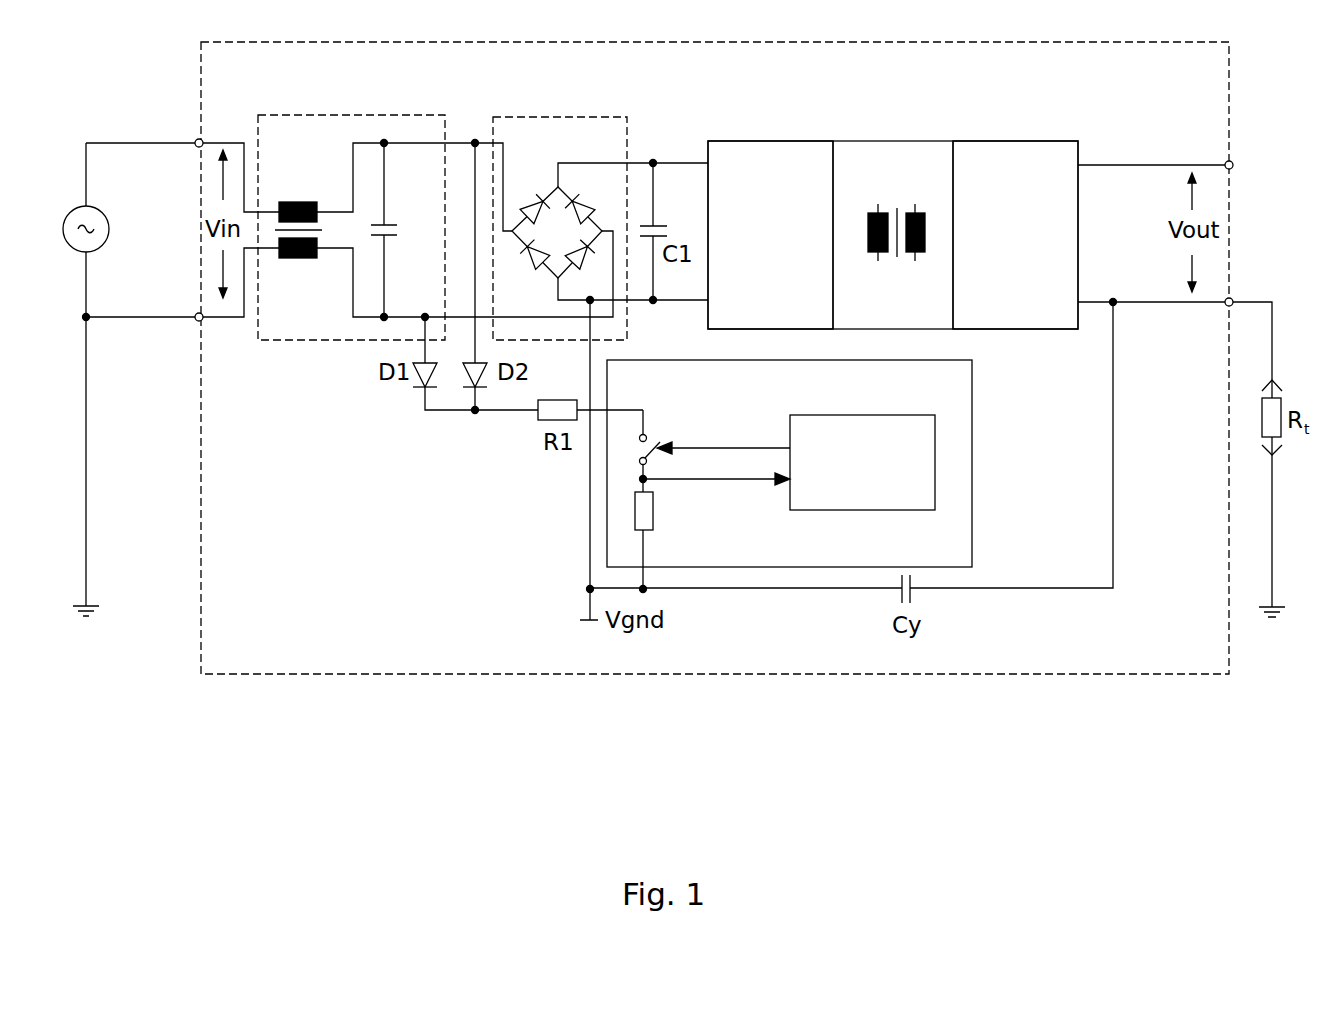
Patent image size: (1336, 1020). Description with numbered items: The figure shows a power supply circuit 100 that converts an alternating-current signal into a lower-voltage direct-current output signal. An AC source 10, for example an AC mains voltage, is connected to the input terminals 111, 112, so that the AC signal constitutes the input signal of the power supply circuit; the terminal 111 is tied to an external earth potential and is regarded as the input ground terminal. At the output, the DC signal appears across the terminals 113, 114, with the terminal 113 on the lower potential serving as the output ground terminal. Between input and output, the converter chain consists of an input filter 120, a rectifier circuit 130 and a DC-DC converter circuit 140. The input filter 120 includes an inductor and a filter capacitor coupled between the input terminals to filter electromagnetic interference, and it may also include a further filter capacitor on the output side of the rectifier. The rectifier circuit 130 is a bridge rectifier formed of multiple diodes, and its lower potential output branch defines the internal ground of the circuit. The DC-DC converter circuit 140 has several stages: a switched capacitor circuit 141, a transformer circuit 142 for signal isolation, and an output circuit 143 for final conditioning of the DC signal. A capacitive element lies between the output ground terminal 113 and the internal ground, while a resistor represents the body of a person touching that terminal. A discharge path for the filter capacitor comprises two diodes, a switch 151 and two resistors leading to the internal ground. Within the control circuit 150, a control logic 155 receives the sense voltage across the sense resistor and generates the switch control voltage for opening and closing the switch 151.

The AC source 10 is at (72, 207).
The power supply circuit 100 is at (838, 675).
The terminal 111 is at (197, 321).
The terminal 112 is at (196, 141).
The terminal 113 is at (1232, 300).
The terminal 114 is at (1232, 163).
The input filter 120 is at (323, 115).
The rectifier circuit 130 is at (558, 116).
The DC-DC converter circuit 140 is at (893, 204).
The switched capacitor circuit 141 is at (793, 195).
The transformer circuit 142 is at (883, 195).
The output circuit 143 is at (1010, 195).
The control circuit 150 is at (828, 474).
The switch 151 is at (652, 434).
The control logic 155 is at (862, 415).